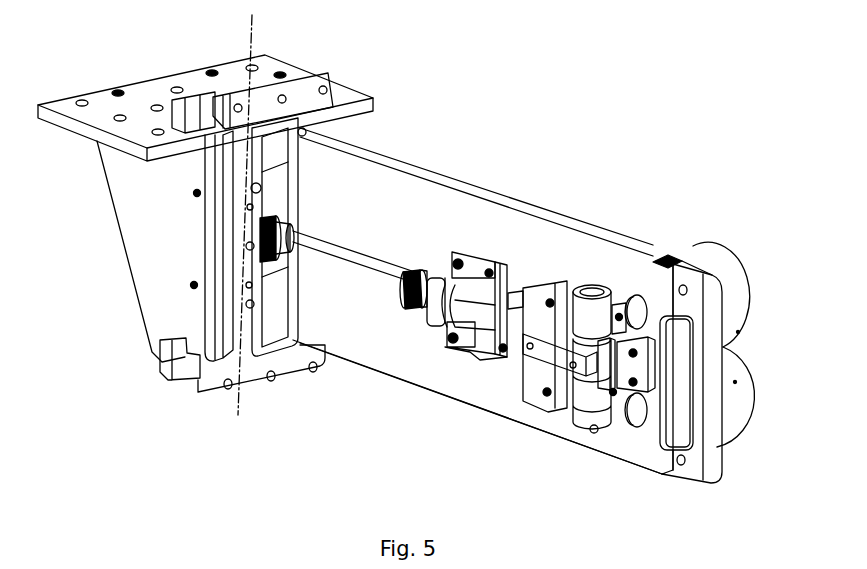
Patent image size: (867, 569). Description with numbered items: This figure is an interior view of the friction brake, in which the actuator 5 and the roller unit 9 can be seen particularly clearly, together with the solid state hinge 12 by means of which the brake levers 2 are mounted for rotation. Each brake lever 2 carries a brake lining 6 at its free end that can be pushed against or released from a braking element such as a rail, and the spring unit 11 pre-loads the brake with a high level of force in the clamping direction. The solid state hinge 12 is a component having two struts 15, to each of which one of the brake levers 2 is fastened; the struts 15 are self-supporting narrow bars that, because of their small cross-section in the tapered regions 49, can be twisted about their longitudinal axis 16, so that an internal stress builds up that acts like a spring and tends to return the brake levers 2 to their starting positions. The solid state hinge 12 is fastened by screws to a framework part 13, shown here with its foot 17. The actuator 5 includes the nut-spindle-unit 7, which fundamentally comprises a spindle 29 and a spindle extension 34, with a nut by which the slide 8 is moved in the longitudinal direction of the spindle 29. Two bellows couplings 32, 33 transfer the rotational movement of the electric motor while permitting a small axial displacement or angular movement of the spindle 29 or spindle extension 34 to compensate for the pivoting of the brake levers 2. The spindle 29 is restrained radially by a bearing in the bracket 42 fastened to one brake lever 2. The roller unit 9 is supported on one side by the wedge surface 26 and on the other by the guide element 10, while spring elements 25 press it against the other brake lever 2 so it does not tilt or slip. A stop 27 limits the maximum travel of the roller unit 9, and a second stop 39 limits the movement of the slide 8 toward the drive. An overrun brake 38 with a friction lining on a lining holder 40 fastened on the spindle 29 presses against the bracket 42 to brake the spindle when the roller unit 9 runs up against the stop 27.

The brake lever 2 is at (547, 243).
The actuator 5 is at (460, 430).
The brake lining 6 is at (670, 410).
The nut-spindle-unit 7 is at (463, 368).
The slide 8 is at (551, 301).
The roller unit 9 is at (589, 320).
The guide element 10 is at (620, 312).
The spring unit 11 is at (720, 260).
The solid state hinge 12 is at (226, 374).
The framework part 13 is at (152, 243).
The strut 15 is at (237, 217).
The longitudinal axis 16 is at (237, 407).
The foot plate 17 is at (270, 388).
The spring element 25 is at (546, 395).
The wedge surface 26 is at (542, 350).
The stop 27 is at (608, 367).
The spindle 29 is at (455, 337).
The bellows coupling 32 is at (413, 270).
The bellows coupling 33 is at (291, 230).
The spindle extension 34 is at (349, 263).
The overrun brake 38 is at (412, 338).
The second stop 39 is at (486, 260).
The lining holder 40 is at (453, 322).
The bracket 42 is at (440, 280).
The tapered region 49 is at (237, 137).